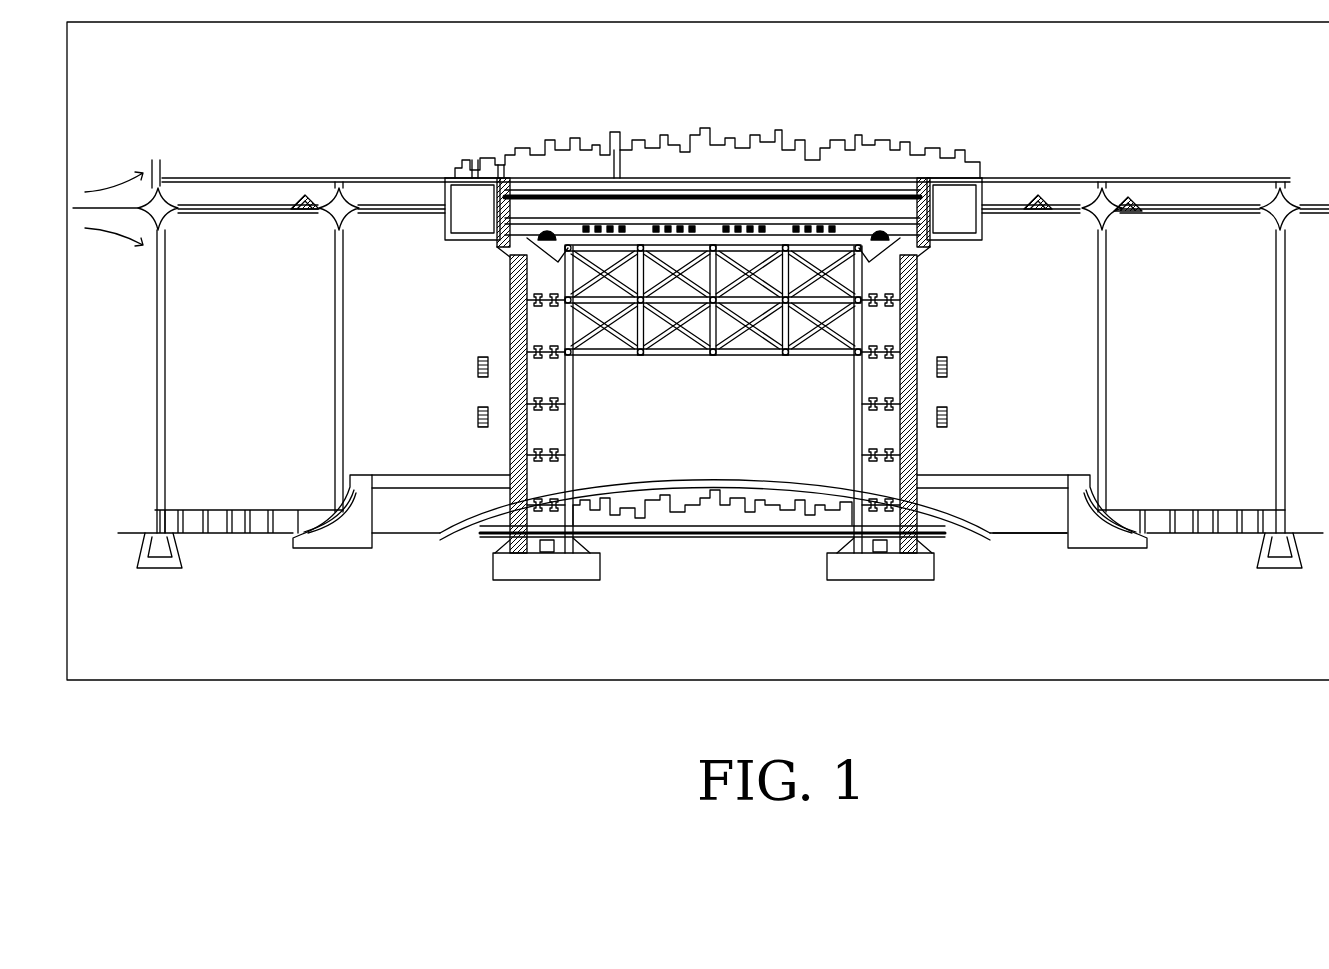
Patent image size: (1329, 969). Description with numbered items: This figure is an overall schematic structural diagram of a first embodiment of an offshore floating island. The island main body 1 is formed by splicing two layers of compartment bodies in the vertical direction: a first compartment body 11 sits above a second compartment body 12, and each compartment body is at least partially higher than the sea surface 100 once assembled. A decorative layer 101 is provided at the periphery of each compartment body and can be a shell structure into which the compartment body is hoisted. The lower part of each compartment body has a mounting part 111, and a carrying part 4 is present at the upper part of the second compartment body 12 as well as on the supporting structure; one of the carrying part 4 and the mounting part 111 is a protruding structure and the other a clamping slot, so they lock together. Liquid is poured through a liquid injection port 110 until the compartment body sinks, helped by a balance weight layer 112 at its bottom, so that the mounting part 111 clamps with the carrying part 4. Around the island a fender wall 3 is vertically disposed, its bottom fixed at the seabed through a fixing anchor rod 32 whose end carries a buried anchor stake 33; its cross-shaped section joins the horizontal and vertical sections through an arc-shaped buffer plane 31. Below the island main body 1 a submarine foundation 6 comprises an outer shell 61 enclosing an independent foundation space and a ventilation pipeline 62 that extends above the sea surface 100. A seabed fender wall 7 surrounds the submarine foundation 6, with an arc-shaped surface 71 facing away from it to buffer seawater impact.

The sea surface 100 is at (73, 208).
The island main body 1 is at (1040, 122).
The first compartment body 11 is at (953, 182).
The second compartment body 12 is at (985, 188).
The decorative layer 101 is at (983, 233).
The liquid injection port 110 is at (453, 178).
The mounting part 111 is at (869, 230).
The balance weight layer 112 is at (697, 190).
The fender wall 3 is at (168, 185).
The arc-shaped buffer plane 31 is at (152, 165).
The fixing anchor rod 32 is at (227, 533).
The anchor stake 33 is at (153, 557).
The carrying part 4 is at (548, 233).
The submarine foundation 6 is at (793, 508).
The outer shell 61 is at (693, 478).
The ventilation pipeline 62 is at (515, 463).
The seabed fender wall 7 is at (353, 540).
The arc-shaped surface 71 is at (328, 507).